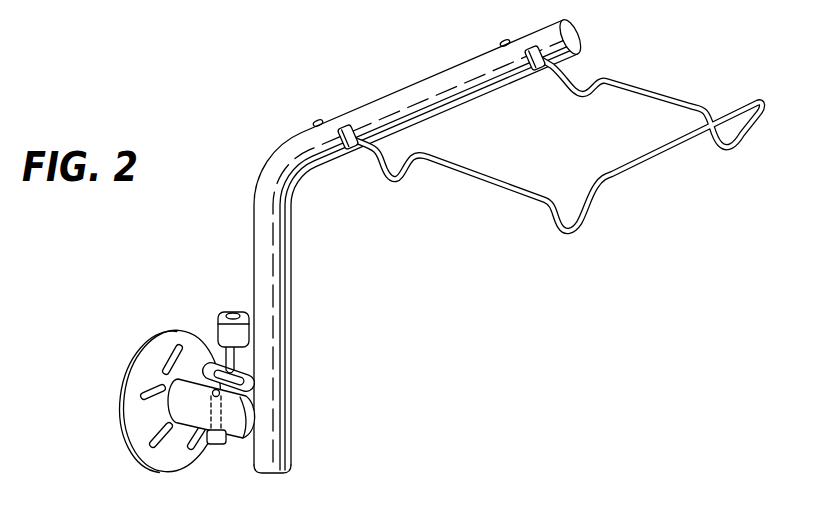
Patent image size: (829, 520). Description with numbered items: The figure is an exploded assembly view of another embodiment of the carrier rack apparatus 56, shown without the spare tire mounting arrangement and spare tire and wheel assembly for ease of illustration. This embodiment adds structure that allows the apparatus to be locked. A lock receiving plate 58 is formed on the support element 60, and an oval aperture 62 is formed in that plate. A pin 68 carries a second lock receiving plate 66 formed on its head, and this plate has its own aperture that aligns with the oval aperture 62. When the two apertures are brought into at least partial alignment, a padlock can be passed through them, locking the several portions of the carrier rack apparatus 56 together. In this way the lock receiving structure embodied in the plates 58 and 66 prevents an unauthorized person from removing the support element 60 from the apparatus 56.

The carrier rack apparatus 56 is at (401, 66).
The lock receiving plate 58 is at (257, 367).
The support element 60 is at (306, 341).
The oval aperture 62 is at (253, 381).
The lock receiving plate 66 is at (200, 366).
The pin 68 is at (212, 440).